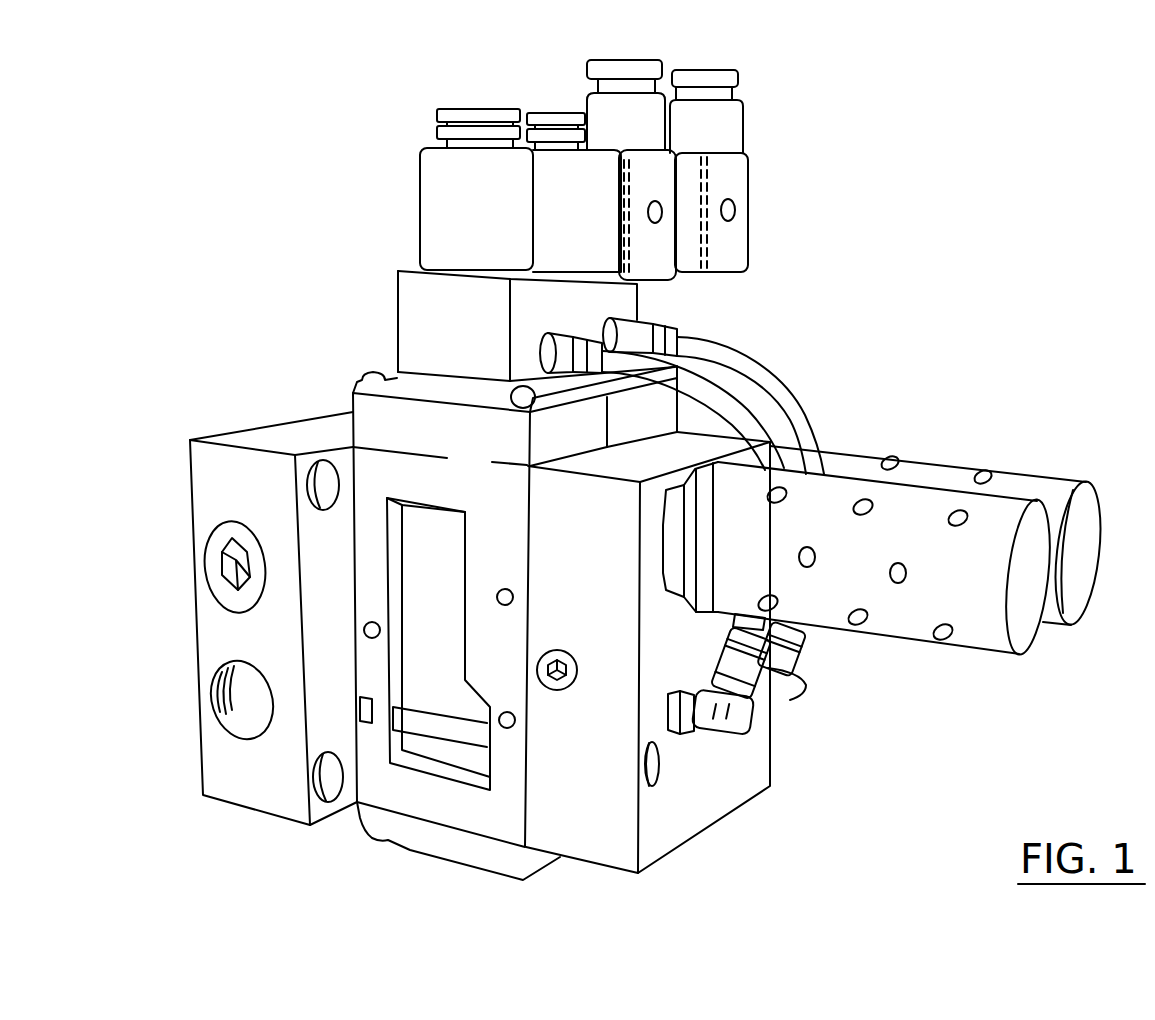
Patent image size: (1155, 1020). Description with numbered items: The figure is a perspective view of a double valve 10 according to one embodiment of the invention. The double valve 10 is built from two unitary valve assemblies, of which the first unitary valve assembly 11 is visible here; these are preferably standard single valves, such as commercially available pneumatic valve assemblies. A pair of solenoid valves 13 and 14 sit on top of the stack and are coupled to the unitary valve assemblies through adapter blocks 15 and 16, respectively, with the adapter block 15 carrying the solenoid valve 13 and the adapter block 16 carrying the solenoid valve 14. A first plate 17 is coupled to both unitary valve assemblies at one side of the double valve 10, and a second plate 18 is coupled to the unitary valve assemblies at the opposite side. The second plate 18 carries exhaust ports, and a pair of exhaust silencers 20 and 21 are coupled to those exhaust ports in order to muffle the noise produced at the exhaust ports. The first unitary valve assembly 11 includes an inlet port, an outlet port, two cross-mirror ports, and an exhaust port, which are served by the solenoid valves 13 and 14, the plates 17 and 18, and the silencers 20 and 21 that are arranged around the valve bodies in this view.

The double valve 10 is at (196, 198).
The first unitary valve assembly 11 is at (455, 810).
The solenoid valve 13 is at (420, 182).
The solenoid valve 14 is at (747, 195).
The adapter block 15 is at (350, 397).
The adapter block 16 is at (677, 407).
The first plate 17 is at (197, 678).
The second plate 18 is at (693, 820).
The exhaust silencer 20 is at (953, 647).
The exhaust silencer 21 is at (1063, 480).